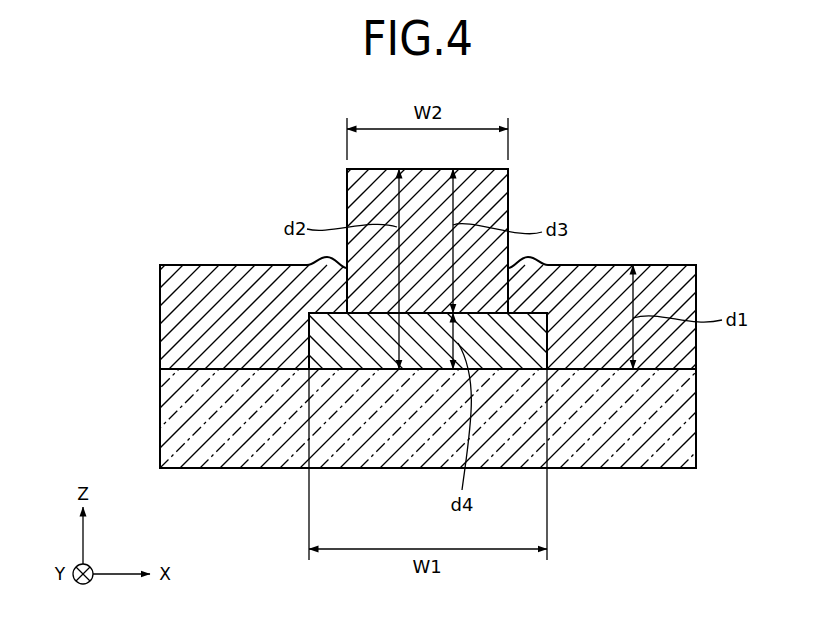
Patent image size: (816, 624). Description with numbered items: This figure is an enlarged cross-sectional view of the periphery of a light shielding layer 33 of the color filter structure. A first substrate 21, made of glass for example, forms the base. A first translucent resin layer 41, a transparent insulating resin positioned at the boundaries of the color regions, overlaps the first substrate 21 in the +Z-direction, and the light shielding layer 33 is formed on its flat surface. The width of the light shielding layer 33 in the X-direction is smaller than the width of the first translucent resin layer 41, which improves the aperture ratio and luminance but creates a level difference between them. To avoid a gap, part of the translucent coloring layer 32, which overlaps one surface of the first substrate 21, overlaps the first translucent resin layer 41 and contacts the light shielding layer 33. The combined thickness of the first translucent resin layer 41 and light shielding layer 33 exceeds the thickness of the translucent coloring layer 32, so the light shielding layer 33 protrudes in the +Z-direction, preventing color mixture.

The first substrate 21 is at (678, 414).
The translucent coloring layer 32 is at (237, 292).
The light shielding layer 33 is at (495, 192).
The first translucent resin layer 41 is at (337, 342).